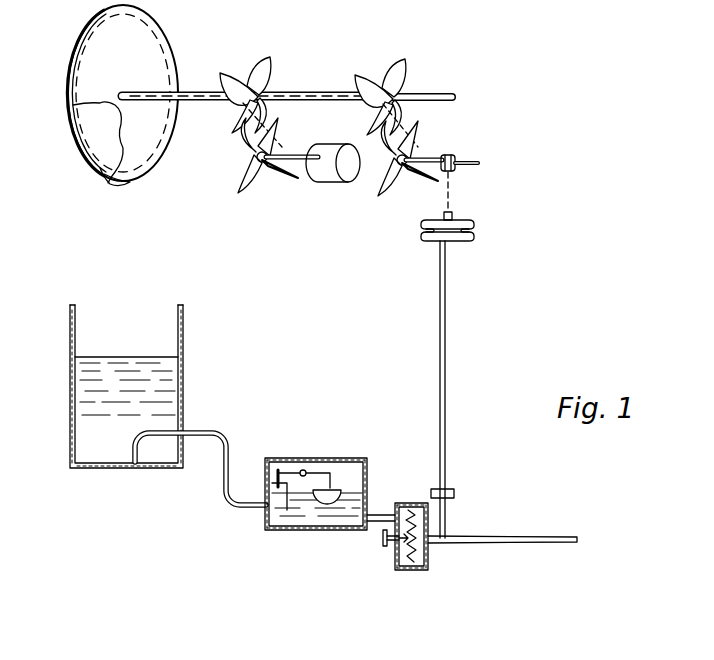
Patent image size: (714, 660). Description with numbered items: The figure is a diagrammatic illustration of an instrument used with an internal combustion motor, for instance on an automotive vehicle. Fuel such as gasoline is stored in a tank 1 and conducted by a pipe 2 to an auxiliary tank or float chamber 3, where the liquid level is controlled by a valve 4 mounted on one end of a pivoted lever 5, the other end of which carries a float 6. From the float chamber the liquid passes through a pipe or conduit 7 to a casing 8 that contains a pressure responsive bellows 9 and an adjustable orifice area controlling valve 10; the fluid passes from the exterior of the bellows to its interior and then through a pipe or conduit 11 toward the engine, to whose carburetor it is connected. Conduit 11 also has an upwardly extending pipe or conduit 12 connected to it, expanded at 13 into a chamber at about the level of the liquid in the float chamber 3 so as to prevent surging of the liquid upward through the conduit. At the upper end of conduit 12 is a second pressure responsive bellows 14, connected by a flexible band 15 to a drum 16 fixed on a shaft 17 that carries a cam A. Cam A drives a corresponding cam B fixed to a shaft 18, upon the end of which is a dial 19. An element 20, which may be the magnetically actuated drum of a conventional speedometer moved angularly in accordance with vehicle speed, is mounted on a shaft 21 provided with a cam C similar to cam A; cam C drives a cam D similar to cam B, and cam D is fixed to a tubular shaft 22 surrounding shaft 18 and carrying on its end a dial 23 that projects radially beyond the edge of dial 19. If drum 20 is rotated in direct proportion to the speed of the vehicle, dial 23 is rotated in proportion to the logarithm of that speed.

The tank 1 is at (194, 391).
The pipe 2 is at (218, 441).
The float chamber 3 is at (302, 530).
The valve 4 is at (281, 470).
The pivoted lever 5 is at (323, 471).
The float 6 is at (341, 489).
The pipe or conduit 7 is at (373, 530).
The casing 8 is at (413, 570).
The bellows 9 is at (414, 507).
The adjustable orifice area controlling valve 10 is at (385, 547).
The pipe or conduit 11 is at (512, 544).
The upwardly extending pipe or conduit 12 is at (447, 519).
The expanded chamber 13 is at (455, 495).
The bellows 14 is at (474, 236).
The flexible band 15 is at (453, 209).
The drum 16 is at (456, 158).
The shaft 17 is at (431, 157).
The shaft 18 is at (422, 100).
The dial 19 is at (92, 131).
The speed responsive element 20 is at (334, 181).
The shaft 21 is at (310, 152).
The tubular shaft 22 is at (193, 90).
The dial 23 is at (126, 185).
The cam A is at (380, 186).
The cam B is at (370, 80).
The cam C is at (246, 158).
The cam D is at (244, 78).